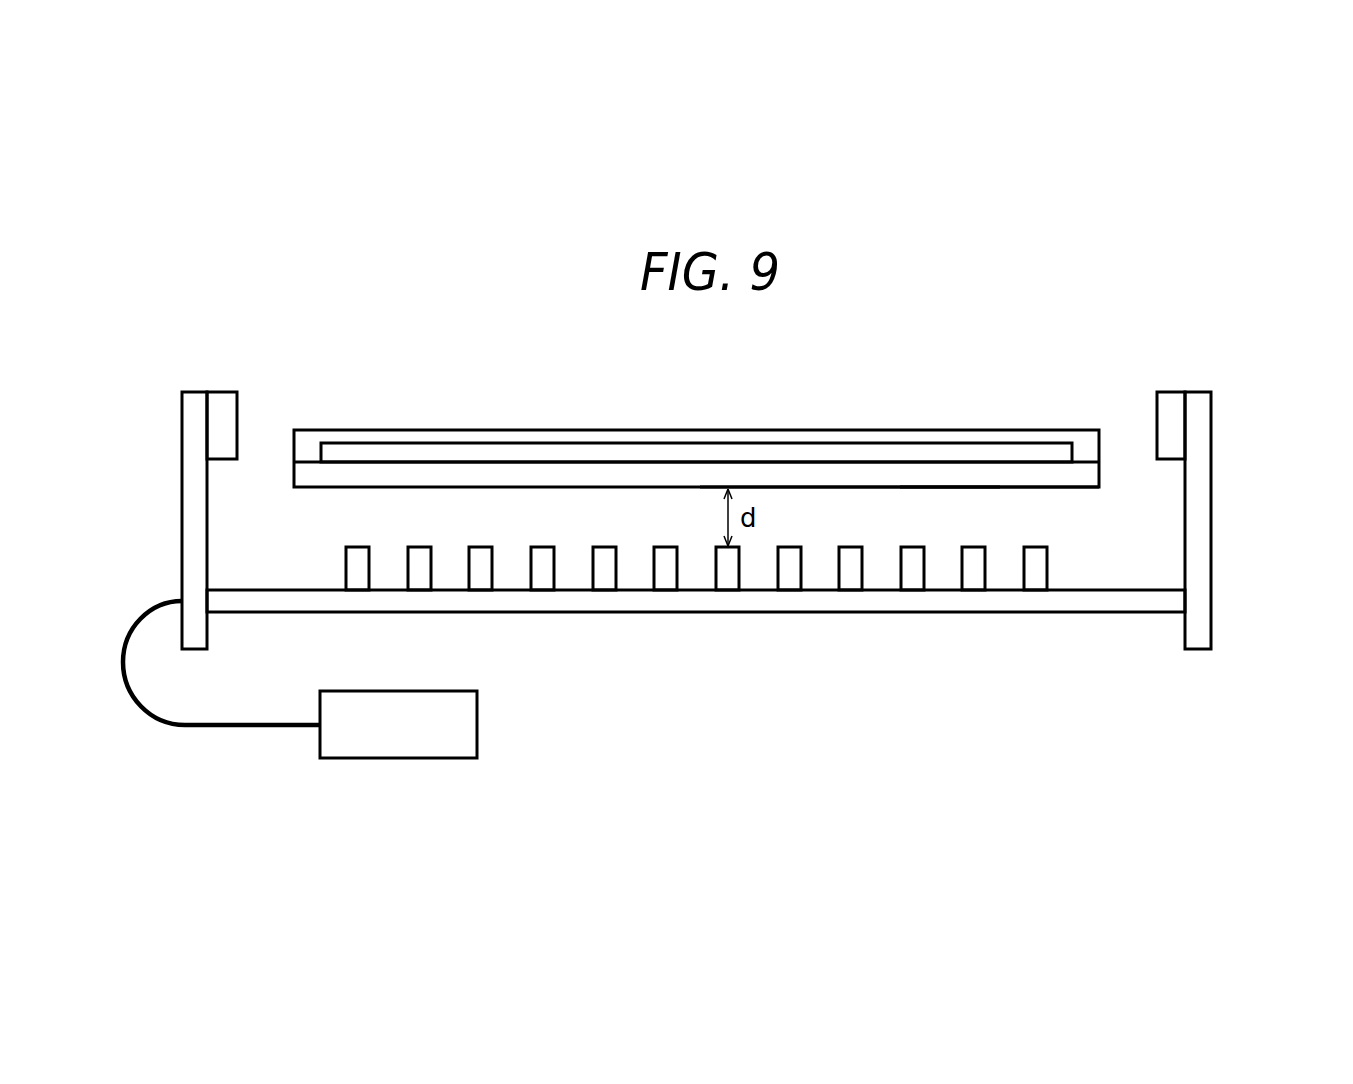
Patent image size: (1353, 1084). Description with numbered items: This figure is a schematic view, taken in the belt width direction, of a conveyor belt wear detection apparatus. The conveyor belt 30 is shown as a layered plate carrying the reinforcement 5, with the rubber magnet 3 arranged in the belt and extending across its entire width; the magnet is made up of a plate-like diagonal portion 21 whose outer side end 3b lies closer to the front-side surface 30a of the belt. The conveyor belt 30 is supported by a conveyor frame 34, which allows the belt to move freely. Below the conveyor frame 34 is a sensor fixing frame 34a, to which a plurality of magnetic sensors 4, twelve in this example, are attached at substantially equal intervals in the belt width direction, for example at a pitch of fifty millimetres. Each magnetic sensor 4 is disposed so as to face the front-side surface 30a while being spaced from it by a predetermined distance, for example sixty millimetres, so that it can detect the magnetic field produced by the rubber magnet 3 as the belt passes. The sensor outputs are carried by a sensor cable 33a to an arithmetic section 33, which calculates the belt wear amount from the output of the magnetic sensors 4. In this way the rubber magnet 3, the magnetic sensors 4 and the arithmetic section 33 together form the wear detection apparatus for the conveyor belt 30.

The rubber magnet 3 is at (790, 460).
The outer side end of diagonal portion 3b is at (877, 489).
The magnetic sensor 4 is at (542, 583).
The reinforcement of conveyor belt 5 is at (916, 455).
The diagonal portion of rubber magnet 21 is at (855, 475).
The conveyor belt 30 is at (975, 408).
The front-side surface of conveyor belt 30a is at (972, 491).
The arithmetic section 33 is at (478, 725).
The sensor cable 33a is at (220, 730).
The conveyor frame 34 is at (1221, 432).
The sensor fixing frame 34a is at (1083, 614).